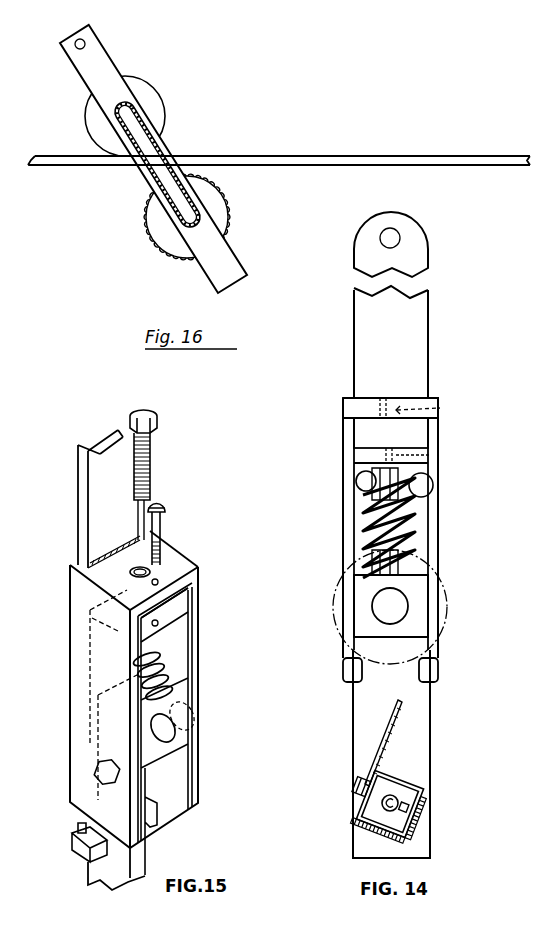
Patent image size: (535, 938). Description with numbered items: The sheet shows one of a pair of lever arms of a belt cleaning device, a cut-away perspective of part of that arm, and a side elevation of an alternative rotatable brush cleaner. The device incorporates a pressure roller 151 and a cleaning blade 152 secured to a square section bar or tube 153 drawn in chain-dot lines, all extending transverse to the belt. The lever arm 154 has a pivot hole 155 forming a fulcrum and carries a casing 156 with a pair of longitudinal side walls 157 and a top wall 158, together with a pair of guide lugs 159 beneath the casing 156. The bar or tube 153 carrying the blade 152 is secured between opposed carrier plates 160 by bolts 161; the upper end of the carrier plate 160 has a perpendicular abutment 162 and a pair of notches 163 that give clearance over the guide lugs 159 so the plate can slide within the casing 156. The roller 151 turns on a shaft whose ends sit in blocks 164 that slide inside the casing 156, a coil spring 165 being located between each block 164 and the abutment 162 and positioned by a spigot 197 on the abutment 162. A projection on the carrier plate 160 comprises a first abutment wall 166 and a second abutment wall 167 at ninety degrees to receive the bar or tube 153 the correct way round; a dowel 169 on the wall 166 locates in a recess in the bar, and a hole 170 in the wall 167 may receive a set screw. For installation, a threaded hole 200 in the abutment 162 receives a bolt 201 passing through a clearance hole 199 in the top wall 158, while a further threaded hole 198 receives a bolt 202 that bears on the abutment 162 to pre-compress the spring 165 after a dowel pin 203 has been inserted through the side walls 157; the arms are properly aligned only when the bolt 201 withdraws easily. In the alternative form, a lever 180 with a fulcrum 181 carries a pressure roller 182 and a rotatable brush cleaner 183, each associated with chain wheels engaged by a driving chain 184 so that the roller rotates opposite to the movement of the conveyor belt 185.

In FIG. 14, the pressure roller 151 is at (445, 617).
In FIG. 14, the cleaning blade 152 is at (385, 734).
In FIG. 14, the square section bar or tube 153 is at (410, 778).
In FIG. 14, the lever arm 154 is at (354, 338).
In FIG. 15, the lever arm 154 is at (98, 497).
In FIG. 14, the pivot hole 155 is at (400, 236).
In FIG. 14, the casing 156 is at (338, 388).
In FIG. 14, the side walls 157 is at (440, 460).
In FIG. 15, the side walls 157 is at (192, 632).
In FIG. 14, the top wall 158 is at (428, 400).
In FIG. 15, the top wall 158 is at (163, 553).
In FIG. 14, the guide lugs 159 is at (435, 675).
In FIG. 14, the carrier plate 160 is at (418, 728).
In FIG. 15, the carrier plate 160 is at (100, 872).
In FIG. 14, the bolts 161 is at (398, 803).
In FIG. 14, the perpendicular abutment 162 is at (418, 445).
In FIG. 15, the perpendicular abutment 162 is at (185, 612).
In FIG. 14, the notches 163 is at (425, 485).
In FIG. 14, the blocks 164 is at (420, 590).
In FIG. 15, the blocks 164 is at (182, 750).
In FIG. 14, the coil spring 165 is at (400, 512).
In FIG. 15, the coil spring 165 is at (170, 692).
In FIG. 14, the first abutment wall 166 is at (363, 828).
In FIG. 14, the second abutment wall 167 is at (410, 845).
In FIG. 14, the dowel 169 is at (362, 813).
In FIG. 14, the hole 170 is at (420, 812).
In FIG. 16, the lever 180 is at (110, 73).
In FIG. 16, the fulcrum 181 is at (86, 40).
In FIG. 16, the pressure roller 182 is at (156, 104).
In FIG. 16, the rotatable brush cleaner 183 is at (222, 207).
In FIG. 16, the driving chain 184 is at (165, 150).
In FIG. 16, the conveyor belt 185 is at (306, 167).
In FIG. 14, the spigot 197 is at (410, 562).
In FIG. 14, the threaded hole 198 is at (410, 398).
In FIG. 15, the threaded hole 198 is at (152, 572).
In FIG. 14, the clearance hole 199 is at (442, 410).
In FIG. 15, the clearance hole 199 is at (158, 582).
In FIG. 14, the threaded hole 200 is at (400, 455).
In FIG. 15, the threaded hole 200 is at (158, 623).
In FIG. 15, the bolt 201 is at (163, 522).
In FIG. 15, the bolt 202 is at (148, 442).
In FIG. 15, the dowel pin 203 is at (98, 782).